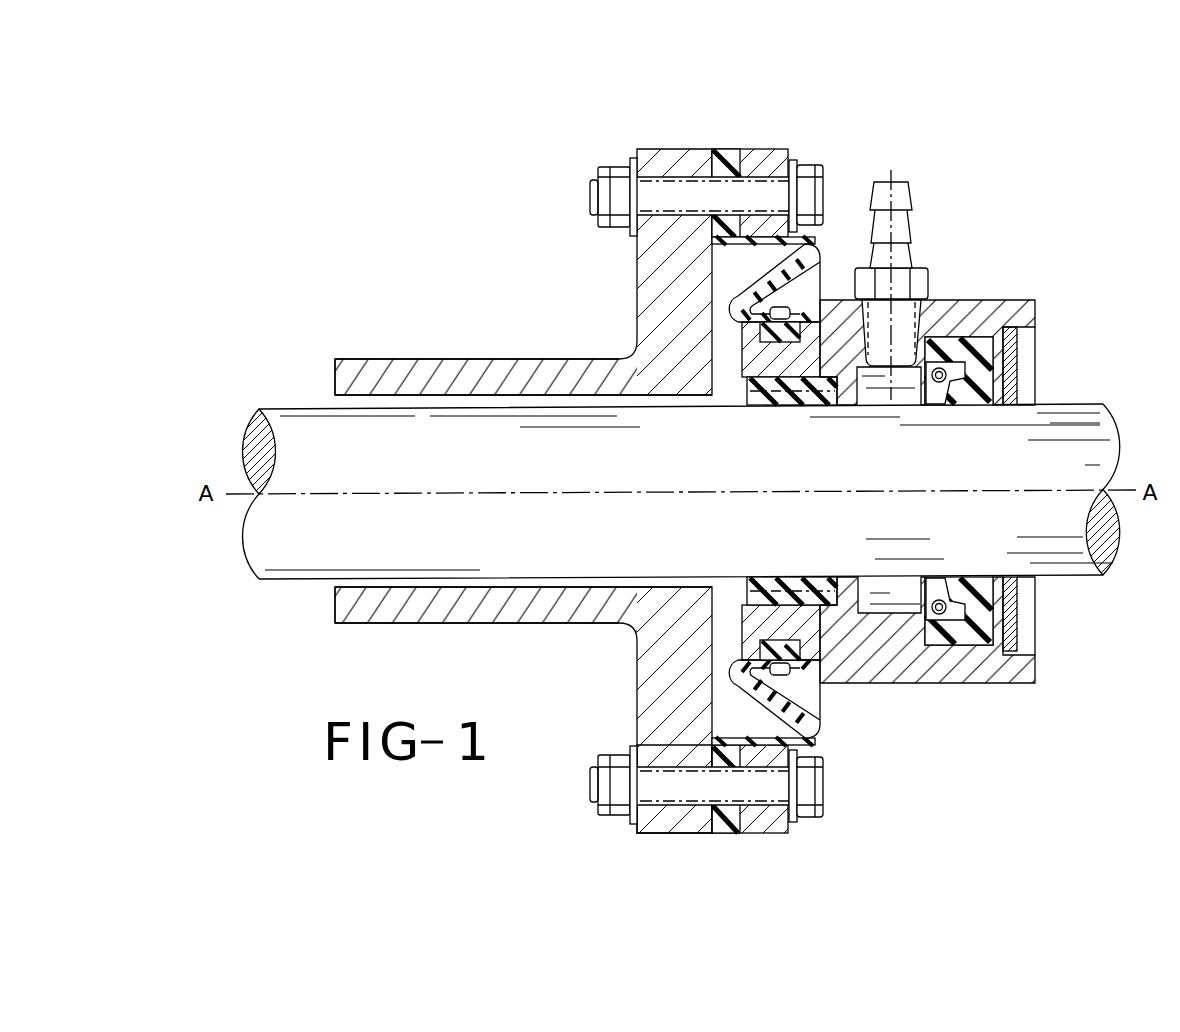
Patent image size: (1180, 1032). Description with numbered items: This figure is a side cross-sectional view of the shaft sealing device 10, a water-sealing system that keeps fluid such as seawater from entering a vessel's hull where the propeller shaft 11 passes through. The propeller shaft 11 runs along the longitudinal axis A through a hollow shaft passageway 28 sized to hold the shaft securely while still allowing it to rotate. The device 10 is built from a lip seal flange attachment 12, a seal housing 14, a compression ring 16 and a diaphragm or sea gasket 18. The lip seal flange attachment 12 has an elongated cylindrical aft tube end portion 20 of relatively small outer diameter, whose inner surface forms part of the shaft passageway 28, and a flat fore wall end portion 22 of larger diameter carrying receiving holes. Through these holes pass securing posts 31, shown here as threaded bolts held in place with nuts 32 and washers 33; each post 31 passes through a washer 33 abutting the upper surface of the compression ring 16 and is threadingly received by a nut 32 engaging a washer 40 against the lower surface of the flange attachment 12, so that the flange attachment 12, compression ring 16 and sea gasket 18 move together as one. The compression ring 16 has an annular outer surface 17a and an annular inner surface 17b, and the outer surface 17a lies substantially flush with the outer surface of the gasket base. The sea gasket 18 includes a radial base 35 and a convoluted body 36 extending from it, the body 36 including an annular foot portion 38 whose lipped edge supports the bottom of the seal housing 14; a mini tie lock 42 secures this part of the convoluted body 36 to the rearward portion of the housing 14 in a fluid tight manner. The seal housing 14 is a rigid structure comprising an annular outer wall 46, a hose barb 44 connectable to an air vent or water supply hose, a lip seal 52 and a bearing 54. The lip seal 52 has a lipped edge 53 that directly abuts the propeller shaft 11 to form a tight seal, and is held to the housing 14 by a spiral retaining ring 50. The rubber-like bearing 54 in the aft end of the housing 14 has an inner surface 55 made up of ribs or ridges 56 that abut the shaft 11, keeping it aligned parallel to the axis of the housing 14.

The shaft sealing device 10 is at (430, 206).
The propeller shaft 11 is at (263, 530).
The lip seal flange attachment 12 is at (388, 352).
The seal housing 14 is at (970, 688).
The compression ring 16 is at (793, 842).
The annular outer surface 17a is at (760, 835).
The annular inner surface 17b is at (780, 737).
The sea gasket 18 is at (718, 842).
The tube end portion 20 is at (488, 358).
The wall end portion 22 is at (643, 833).
The shaft passageway 28 is at (338, 400).
The securing post 31 is at (815, 172).
The nut 32 is at (612, 222).
The washer 33 is at (632, 160).
The radial base 35 is at (727, 149).
The convoluted body 36 is at (737, 303).
The annular foot portion 38 is at (746, 392).
The washer 40 is at (797, 168).
The mini tie lock 42 is at (800, 680).
The hose barb 44 is at (905, 192).
The annular outer wall 46 is at (988, 300).
The spiral retaining ring 50 is at (1020, 345).
The lip seal 52 is at (940, 385).
The lipped edge 53 is at (930, 580).
The bearing 54 is at (838, 580).
The inner surface 55 is at (795, 580).
The ribs or ridges 56 is at (768, 578).